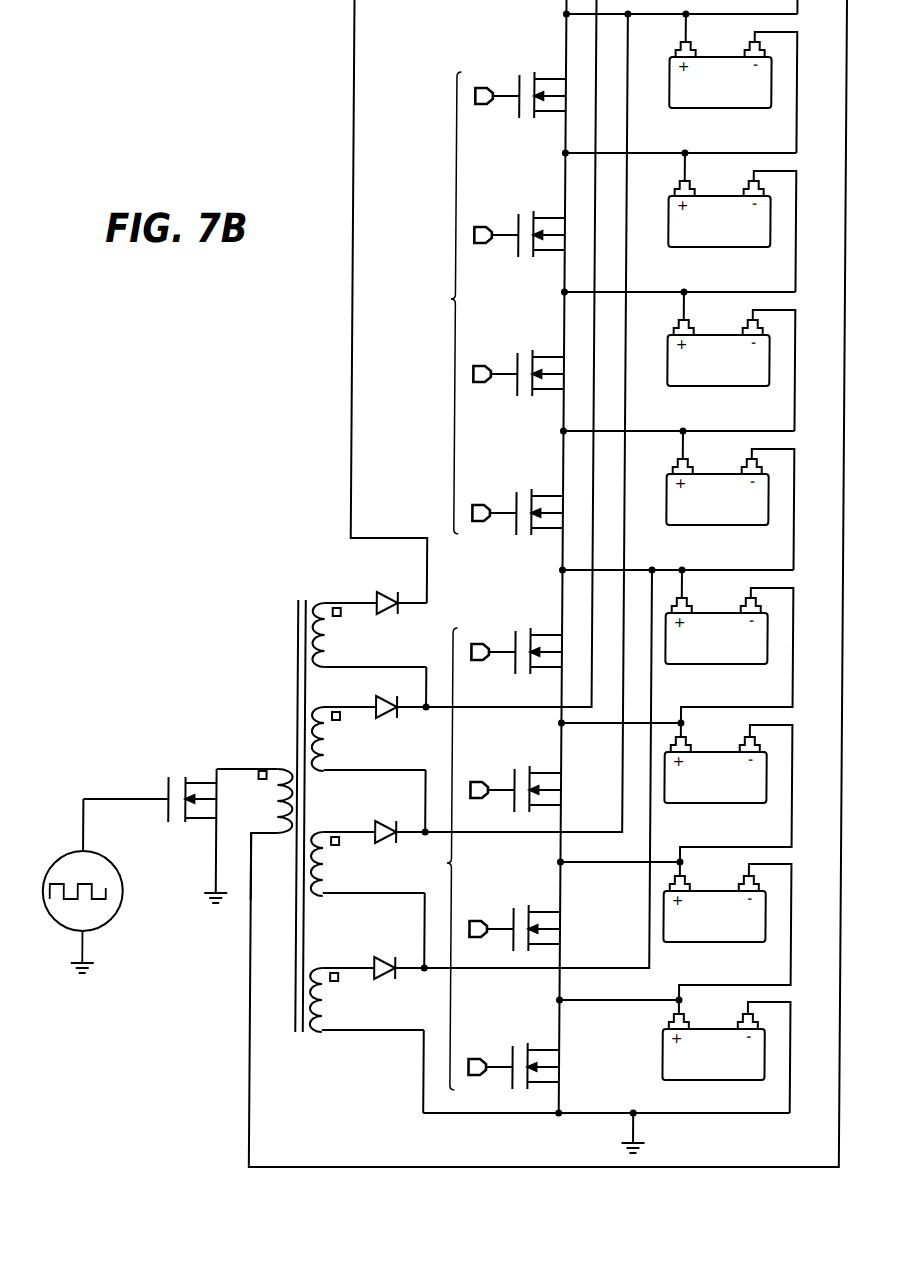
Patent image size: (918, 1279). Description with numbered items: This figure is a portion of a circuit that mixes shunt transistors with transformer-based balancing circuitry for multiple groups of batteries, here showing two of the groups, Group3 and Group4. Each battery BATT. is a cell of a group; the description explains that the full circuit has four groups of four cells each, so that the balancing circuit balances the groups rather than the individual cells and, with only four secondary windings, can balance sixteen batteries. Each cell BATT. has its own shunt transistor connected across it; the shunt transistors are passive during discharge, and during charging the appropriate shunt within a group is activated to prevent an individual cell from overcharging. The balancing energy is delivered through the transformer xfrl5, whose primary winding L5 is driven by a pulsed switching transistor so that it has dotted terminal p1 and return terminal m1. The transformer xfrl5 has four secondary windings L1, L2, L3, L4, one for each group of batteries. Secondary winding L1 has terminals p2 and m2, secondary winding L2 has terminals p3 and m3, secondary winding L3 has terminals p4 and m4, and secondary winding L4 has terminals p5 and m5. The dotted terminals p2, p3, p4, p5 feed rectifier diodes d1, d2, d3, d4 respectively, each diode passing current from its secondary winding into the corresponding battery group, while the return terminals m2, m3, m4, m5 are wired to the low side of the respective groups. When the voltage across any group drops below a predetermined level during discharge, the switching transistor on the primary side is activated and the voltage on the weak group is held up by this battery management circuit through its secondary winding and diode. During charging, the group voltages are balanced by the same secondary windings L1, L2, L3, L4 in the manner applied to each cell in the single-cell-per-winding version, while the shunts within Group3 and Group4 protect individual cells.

The battery cell BATT. is at (716, 561).
The third group of switches Group3 is at (420, 303).
The fourth group of switches Group4 is at (417, 859).
The multi-winding transformer xfrl5 is at (268, 816).
The transformer primary winding L5 is at (266, 801).
The transformer secondary winding L1 is at (337, 635).
The transformer secondary winding L2 is at (337, 739).
The transformer secondary winding L3 is at (336, 864).
The transformer secondary winding L4 is at (335, 1000).
The primary winding dot terminal p1 is at (257, 761).
The secondary winding dot terminal p2 is at (344, 598).
The secondary winding dot terminal p3 is at (343, 702).
The secondary winding dot terminal p4 is at (342, 827).
The secondary winding dot terminal p5 is at (341, 963).
The primary winding return terminal m1 is at (260, 853).
The secondary winding return terminal m2 is at (375, 657).
The secondary winding return terminal m3 is at (375, 760).
The secondary winding return terminal m4 is at (374, 883).
The secondary winding return terminal m5 is at (373, 1020).
The rectifier diode d1 is at (394, 593).
The rectifier diode d2 is at (393, 697).
The rectifier diode d3 is at (392, 822).
The rectifier diode d4 is at (391, 958).